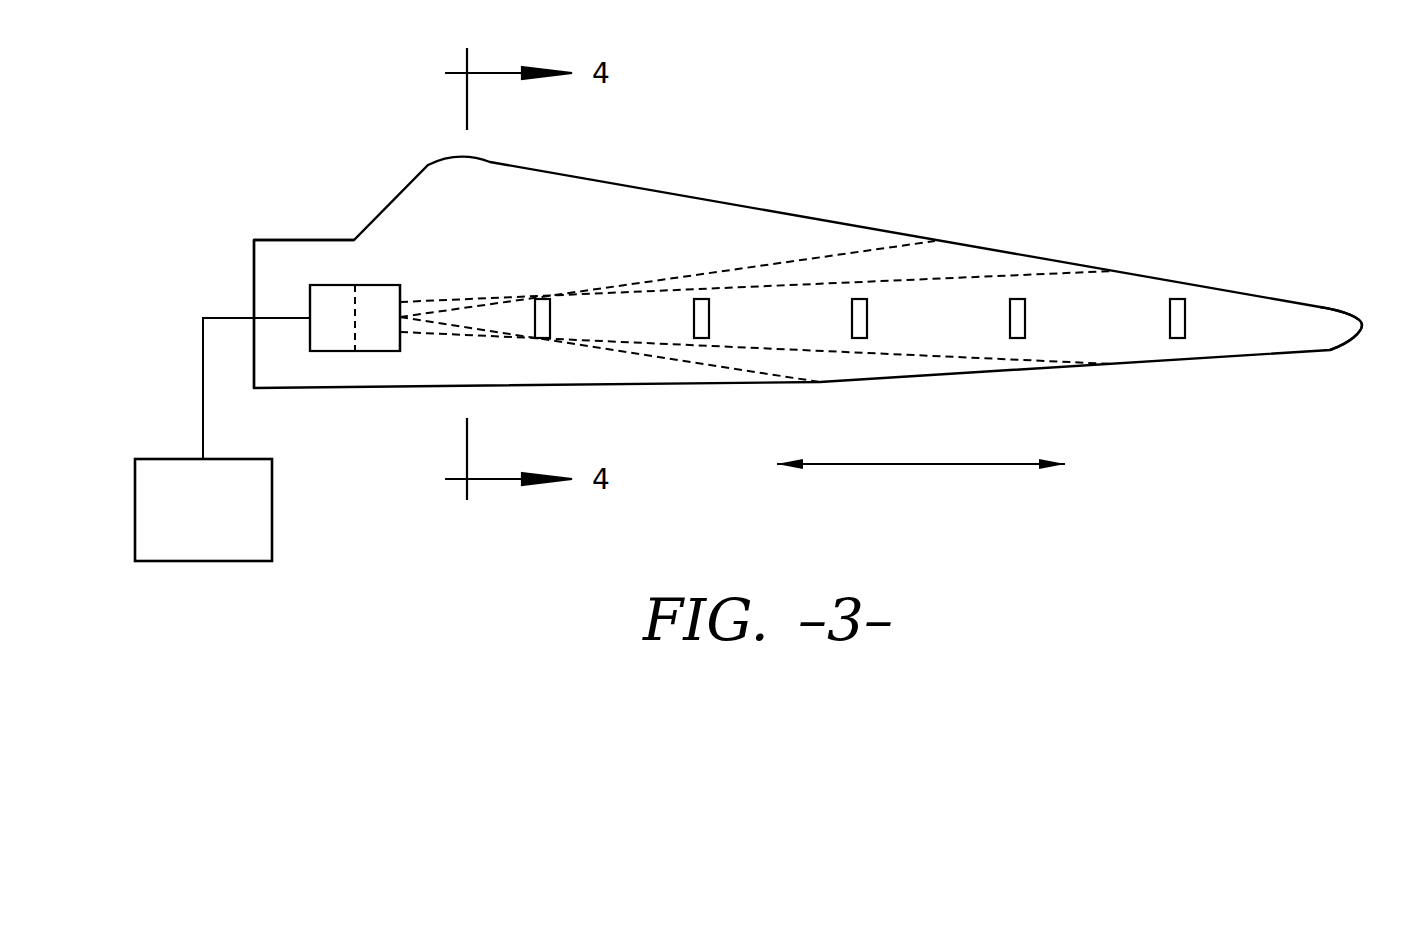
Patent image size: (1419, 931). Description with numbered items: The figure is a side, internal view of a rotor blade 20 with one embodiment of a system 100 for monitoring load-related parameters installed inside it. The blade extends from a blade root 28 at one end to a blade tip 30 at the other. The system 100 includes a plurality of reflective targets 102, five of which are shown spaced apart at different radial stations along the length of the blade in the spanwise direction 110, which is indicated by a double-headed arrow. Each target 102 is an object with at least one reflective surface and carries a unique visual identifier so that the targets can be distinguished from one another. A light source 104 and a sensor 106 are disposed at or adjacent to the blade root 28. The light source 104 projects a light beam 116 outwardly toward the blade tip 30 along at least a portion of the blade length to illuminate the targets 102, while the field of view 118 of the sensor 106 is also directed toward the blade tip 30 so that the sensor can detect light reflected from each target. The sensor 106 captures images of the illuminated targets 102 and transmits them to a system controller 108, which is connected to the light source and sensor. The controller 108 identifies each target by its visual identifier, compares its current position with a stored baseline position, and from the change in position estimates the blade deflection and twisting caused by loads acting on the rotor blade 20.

The rotor blade 20 is at (916, 151).
The blade root 28 is at (285, 240).
The blade tip 30 is at (1362, 328).
The system 100 is at (399, 256).
The reflective targets 102 is at (550, 312).
The light source 104 is at (383, 285).
The sensor 106 is at (333, 352).
The system controller 108 is at (227, 525).
The spanwise direction 110 is at (960, 465).
The light beam 116 is at (713, 367).
The field of view 118 is at (962, 360).